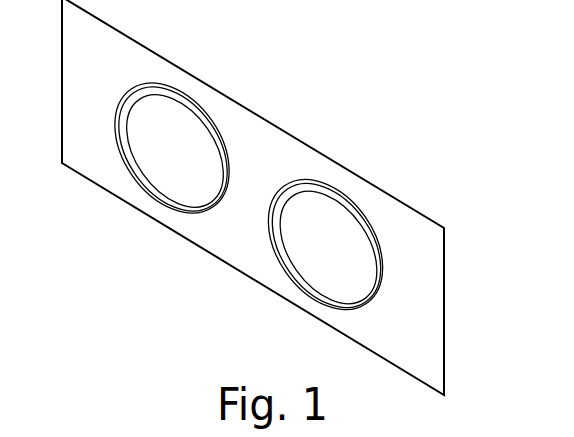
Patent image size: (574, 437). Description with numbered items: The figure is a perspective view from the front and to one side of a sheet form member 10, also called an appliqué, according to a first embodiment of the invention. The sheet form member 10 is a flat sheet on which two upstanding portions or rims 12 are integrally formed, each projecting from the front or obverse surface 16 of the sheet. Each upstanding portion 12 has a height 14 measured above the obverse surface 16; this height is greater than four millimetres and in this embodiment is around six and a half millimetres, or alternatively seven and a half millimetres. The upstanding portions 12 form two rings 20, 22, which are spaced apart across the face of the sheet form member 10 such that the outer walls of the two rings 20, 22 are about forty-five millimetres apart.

The sheet form member 10 is at (264, 101).
The upstanding portion 12 is at (157, 88).
The height 14 is at (378, 252).
The front or obverse surface 16 is at (104, 118).
The ring 20 is at (140, 183).
The ring 22 is at (308, 282).